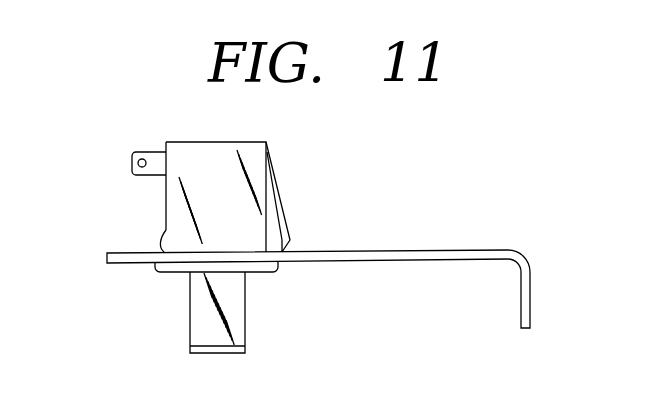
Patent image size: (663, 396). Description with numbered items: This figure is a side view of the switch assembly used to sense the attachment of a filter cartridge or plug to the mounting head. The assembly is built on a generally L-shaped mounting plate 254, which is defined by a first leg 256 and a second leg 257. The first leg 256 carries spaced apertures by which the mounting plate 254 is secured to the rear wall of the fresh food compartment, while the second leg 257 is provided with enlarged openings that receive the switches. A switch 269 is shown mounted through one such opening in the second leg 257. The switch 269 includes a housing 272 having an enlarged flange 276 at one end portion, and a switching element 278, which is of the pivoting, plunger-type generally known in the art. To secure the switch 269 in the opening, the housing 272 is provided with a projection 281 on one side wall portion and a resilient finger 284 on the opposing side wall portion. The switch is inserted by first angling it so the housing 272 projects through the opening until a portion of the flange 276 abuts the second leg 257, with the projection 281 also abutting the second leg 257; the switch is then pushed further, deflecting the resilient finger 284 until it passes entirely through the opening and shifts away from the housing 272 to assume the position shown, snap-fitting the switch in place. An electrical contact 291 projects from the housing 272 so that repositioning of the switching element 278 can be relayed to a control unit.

The mounting plate 254 is at (362, 260).
The first leg 256 is at (532, 290).
The second leg 257 is at (425, 250).
The switch 269 is at (227, 143).
The housing 272 is at (192, 152).
The enlarged flange 276 is at (158, 273).
The switching element 278 is at (245, 318).
The projection 281 is at (164, 243).
The resilient finger 284 is at (280, 197).
The electrical contact 291 is at (134, 153).